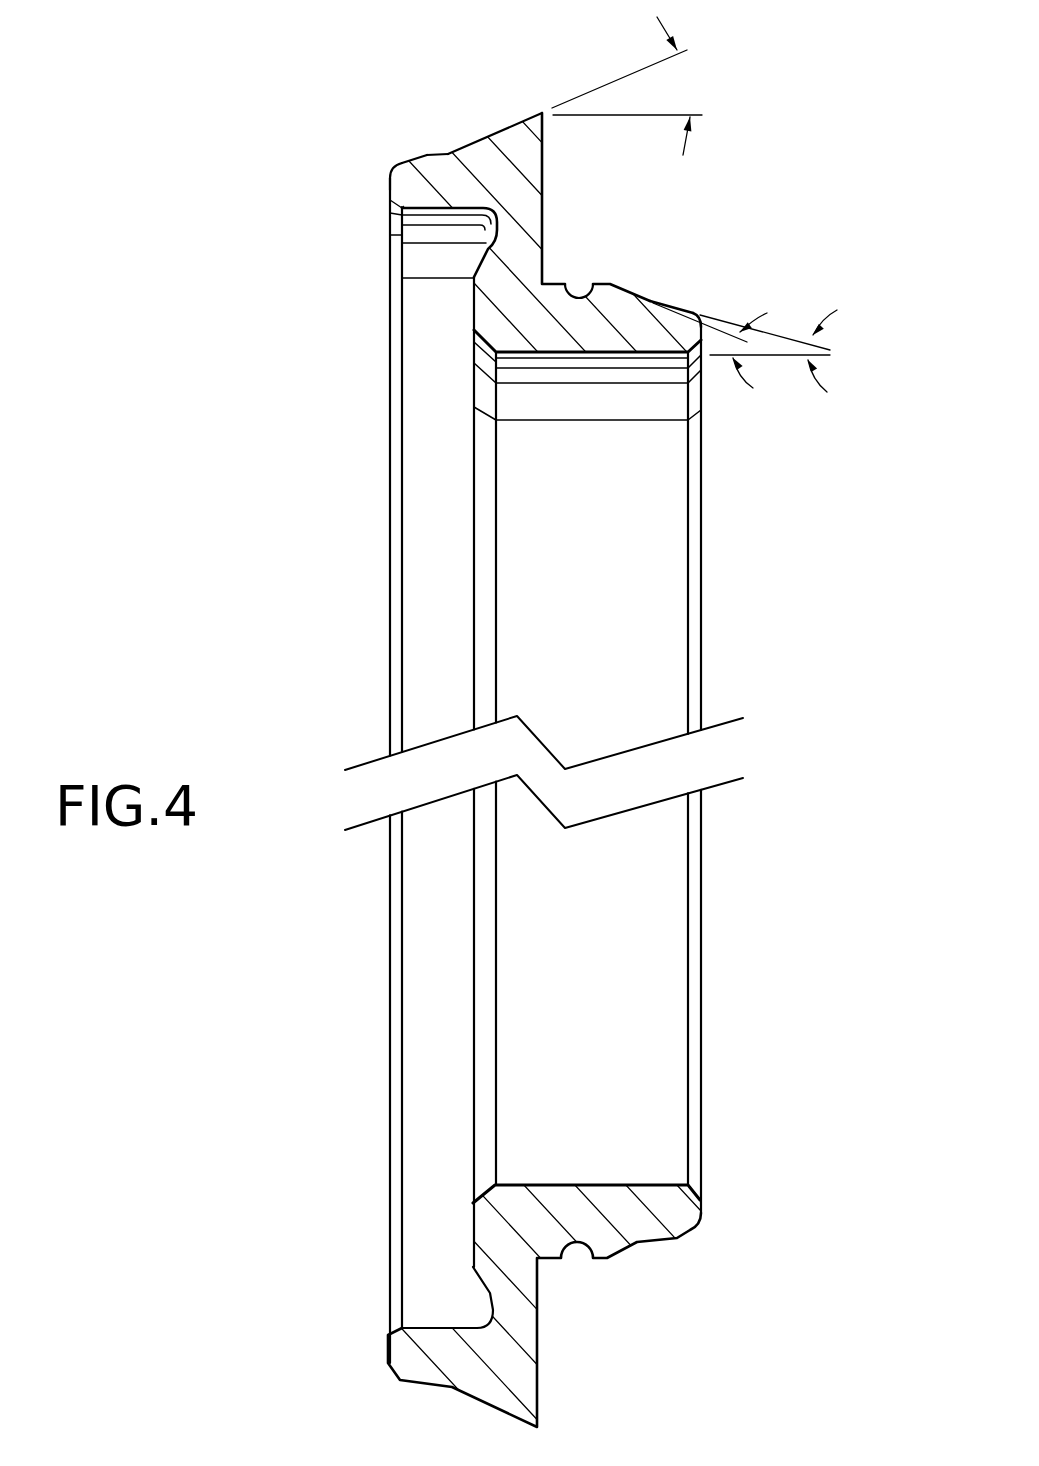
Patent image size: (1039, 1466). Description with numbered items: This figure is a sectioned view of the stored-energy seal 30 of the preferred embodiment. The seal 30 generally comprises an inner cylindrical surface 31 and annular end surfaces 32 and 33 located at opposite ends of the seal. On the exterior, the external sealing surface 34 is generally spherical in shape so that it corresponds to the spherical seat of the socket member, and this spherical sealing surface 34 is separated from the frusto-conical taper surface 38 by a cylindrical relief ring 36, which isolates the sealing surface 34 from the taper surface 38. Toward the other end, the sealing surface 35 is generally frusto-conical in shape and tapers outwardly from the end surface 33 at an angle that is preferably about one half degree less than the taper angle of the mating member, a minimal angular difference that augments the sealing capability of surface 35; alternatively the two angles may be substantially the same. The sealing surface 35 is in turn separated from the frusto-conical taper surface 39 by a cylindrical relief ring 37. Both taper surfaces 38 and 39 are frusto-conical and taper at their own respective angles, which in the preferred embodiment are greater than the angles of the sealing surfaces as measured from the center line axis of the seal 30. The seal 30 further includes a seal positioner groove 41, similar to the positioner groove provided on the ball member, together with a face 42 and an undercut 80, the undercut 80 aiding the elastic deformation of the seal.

The stored-energy seal 30 is at (378, 155).
The inner cylindrical surface 31 is at (601, 352).
The annular end surface 32 is at (389, 188).
The annular end surface 33 is at (700, 1213).
The external sealing surface 34 is at (415, 157).
The sealing surface 35 is at (673, 302).
The cylindrical relief ring 36 is at (443, 157).
The cylindrical relief ring 37 is at (650, 300).
The frusto-conical taper surface 38 is at (510, 127).
The frusto-conical taper surface 39 is at (622, 290).
The seal positioner groove 41 is at (579, 296).
The face 42 is at (545, 155).
The undercut 80 is at (482, 228).